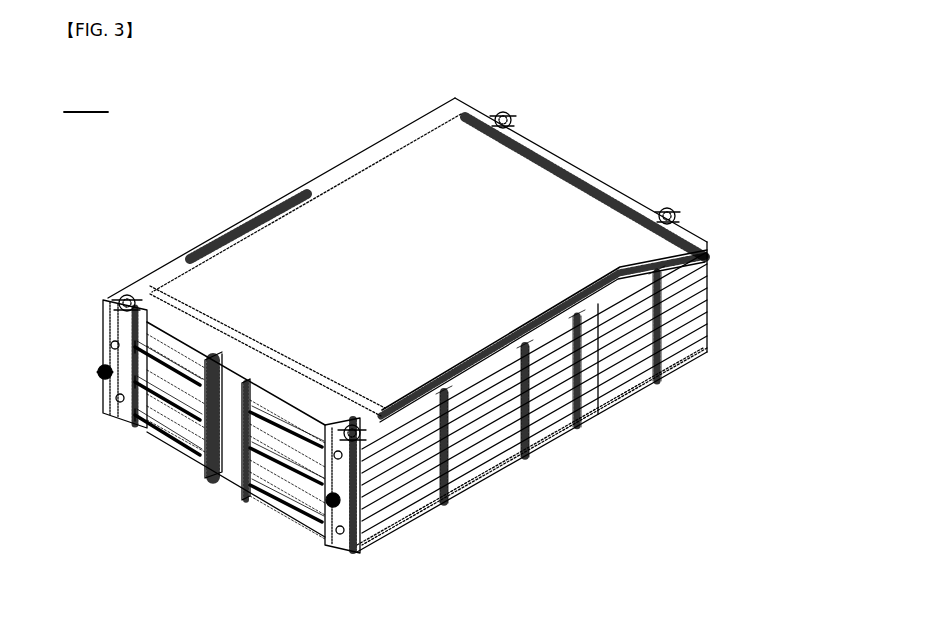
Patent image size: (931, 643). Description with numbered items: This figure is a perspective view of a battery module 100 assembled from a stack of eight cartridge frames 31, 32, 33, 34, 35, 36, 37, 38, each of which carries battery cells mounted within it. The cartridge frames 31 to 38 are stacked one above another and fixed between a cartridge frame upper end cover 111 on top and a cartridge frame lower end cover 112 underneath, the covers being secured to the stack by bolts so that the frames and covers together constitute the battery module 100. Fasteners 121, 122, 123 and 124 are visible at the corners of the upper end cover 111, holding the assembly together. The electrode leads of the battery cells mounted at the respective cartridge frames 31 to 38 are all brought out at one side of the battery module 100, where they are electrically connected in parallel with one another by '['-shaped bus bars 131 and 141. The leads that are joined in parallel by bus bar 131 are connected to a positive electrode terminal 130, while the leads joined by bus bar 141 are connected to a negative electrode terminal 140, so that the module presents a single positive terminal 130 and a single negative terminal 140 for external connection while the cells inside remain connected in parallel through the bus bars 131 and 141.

The battery module 100 is at (86, 101).
The cartridge frame upper end cover 111 is at (690, 250).
The cartridge frame lower end cover 112 is at (690, 357).
The fastening bolt 121 is at (128, 301).
The fastening bolt 122 is at (353, 430).
The fastening bolt 123 is at (673, 215).
The fastening bolt 124 is at (507, 119).
The positive electrode terminal 130 is at (103, 374).
The bus bar 131 is at (107, 380).
The negative electrode terminal 140 is at (315, 500).
The bus bar 141 is at (300, 440).
The cartridge frame 31 is at (709, 343).
The cartridge frame 32 is at (709, 331).
The cartridge frame 33 is at (709, 319).
The cartridge frame 34 is at (709, 307).
The cartridge frame 35 is at (709, 295).
The cartridge frame 36 is at (709, 283).
The cartridge frame 37 is at (709, 271).
The cartridge frame 38 is at (709, 259).